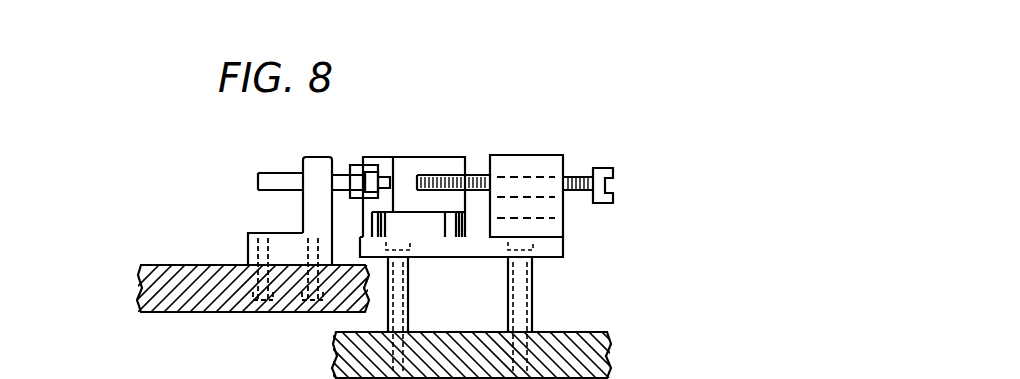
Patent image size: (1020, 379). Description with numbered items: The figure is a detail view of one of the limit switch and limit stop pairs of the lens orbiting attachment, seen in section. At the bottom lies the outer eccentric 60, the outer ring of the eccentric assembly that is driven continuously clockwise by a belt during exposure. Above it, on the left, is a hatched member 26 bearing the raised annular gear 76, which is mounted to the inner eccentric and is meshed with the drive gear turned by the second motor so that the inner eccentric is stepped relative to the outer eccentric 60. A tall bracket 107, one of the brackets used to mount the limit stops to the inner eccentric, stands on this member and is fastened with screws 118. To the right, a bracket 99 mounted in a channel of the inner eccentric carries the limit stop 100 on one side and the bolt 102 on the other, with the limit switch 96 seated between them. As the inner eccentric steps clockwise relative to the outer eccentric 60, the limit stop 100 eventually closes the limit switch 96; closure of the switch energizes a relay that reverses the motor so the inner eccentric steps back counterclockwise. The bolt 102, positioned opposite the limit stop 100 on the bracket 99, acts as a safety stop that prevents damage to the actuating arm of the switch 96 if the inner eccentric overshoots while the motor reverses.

The base member 26 is at (138, 288).
The raised annular gear 76 is at (192, 263).
The bracket 107 is at (313, 157).
The screws 118 is at (245, 318).
The limit stop 100 is at (340, 167).
The limit switch 96 is at (408, 155).
The bolt 102 is at (478, 175).
The bracket 99 is at (563, 250).
The outer eccentric ring member 60 is at (610, 363).